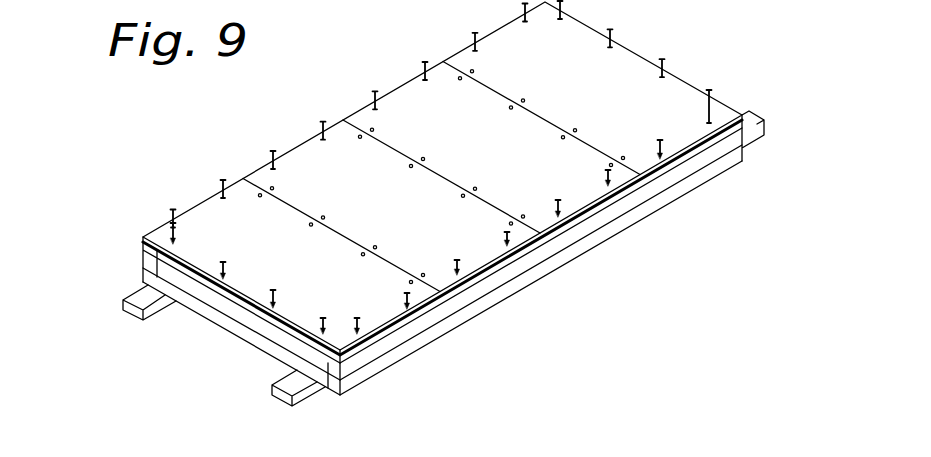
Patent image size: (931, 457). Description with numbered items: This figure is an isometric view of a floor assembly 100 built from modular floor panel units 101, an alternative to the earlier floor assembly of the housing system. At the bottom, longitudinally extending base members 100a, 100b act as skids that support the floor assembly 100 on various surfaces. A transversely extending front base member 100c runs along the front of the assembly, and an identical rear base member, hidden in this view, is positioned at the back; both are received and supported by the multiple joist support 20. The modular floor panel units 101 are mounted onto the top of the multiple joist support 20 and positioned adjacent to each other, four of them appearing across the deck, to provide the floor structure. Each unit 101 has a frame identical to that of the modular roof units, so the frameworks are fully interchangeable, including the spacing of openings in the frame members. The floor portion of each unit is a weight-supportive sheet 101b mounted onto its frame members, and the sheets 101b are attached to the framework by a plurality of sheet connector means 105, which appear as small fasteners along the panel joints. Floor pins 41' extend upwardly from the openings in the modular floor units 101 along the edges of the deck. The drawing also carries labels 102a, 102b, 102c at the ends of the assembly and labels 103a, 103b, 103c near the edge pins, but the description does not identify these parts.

The floor assembly 100 is at (397, 86).
The modular floor panel units 101 is at (290, 265).
The sheet connector means 105 is at (321, 216).
The floor pins 41' is at (349, 116).
The pins along rear edge 103a is at (706, 124).
The pins along front left edge 103b is at (359, 330).
The pins along front right edge 103c is at (558, 219).
The weight-supportive sheet 101b is at (390, 331).
The multiple joist support 20 is at (428, 327).
The front base member 100c is at (222, 314).
The end board 102c is at (143, 239).
The end board 102a is at (350, 358).
The end board 102b is at (750, 112).
The longitudinally extending base member 100b is at (123, 305).
The longitudinally extending base member 100a is at (273, 393).